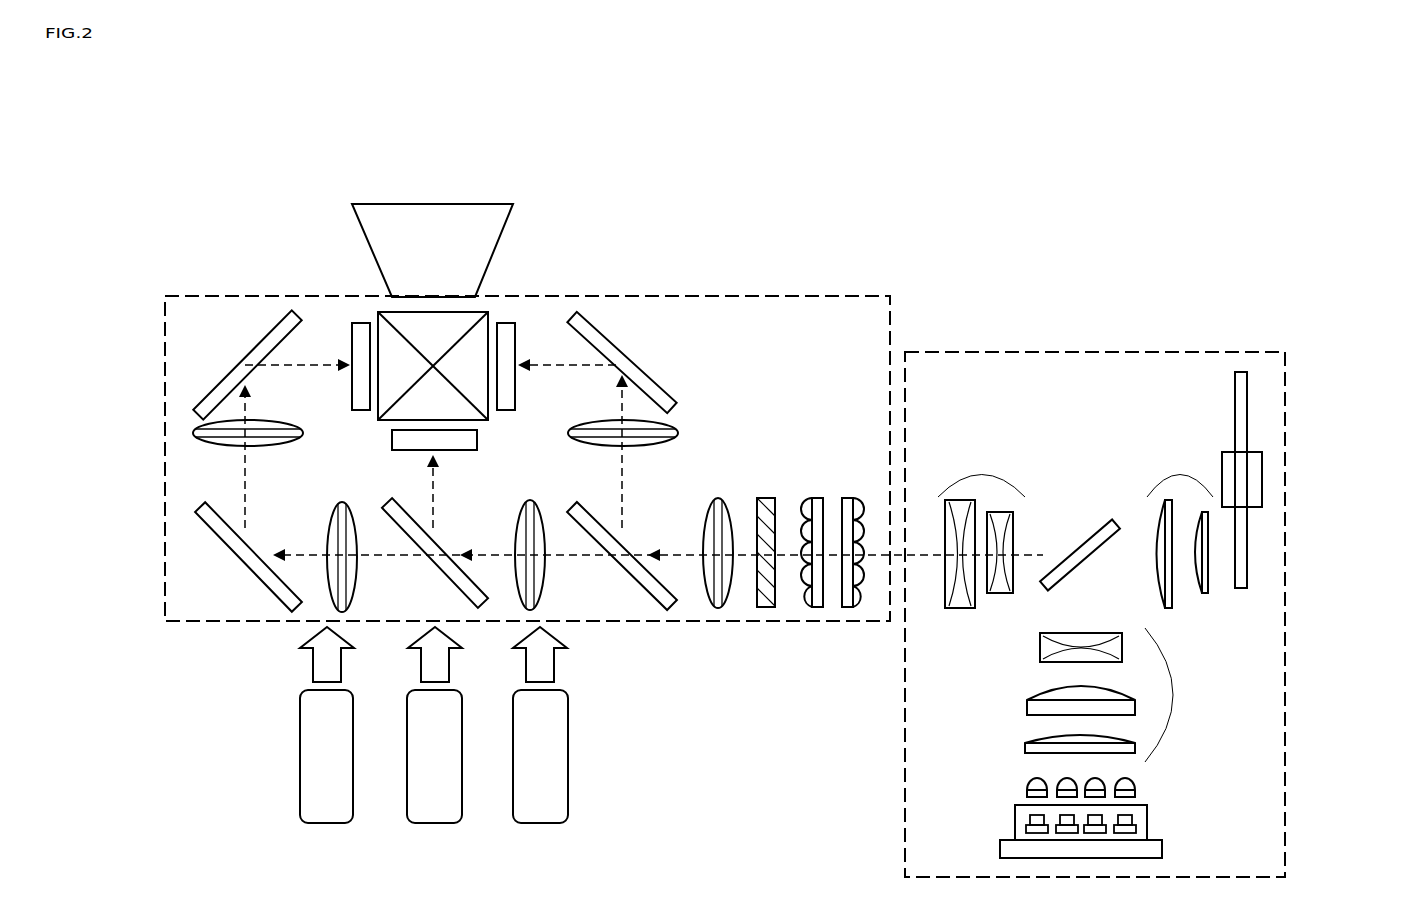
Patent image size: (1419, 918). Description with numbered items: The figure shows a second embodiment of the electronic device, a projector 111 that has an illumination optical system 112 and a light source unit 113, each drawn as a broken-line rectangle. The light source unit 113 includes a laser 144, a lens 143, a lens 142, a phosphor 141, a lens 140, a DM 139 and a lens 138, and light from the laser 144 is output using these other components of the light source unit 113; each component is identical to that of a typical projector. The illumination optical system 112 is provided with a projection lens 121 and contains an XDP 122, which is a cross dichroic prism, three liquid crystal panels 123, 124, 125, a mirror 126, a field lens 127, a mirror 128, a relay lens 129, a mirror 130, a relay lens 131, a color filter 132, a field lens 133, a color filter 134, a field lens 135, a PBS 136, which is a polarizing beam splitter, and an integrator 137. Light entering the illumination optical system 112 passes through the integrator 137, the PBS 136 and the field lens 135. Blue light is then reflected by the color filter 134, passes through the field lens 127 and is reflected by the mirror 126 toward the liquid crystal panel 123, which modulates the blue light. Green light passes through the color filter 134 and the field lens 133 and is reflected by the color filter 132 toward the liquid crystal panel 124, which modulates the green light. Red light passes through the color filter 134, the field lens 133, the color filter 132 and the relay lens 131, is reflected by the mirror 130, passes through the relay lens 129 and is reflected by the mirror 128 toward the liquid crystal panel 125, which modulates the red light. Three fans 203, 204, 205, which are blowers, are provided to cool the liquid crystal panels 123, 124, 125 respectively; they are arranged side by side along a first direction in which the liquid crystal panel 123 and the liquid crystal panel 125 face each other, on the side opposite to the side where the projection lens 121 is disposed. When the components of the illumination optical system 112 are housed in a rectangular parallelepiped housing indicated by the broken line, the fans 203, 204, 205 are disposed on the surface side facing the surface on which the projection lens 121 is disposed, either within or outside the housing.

The projector 111 is at (1020, 227).
The illumination optical system 112 is at (357, 296).
The light source unit 113 is at (1200, 353).
The projection lens 121 is at (488, 215).
The XDP 122 is at (478, 308).
The liquid crystal panel 123 is at (508, 323).
The liquid crystal panel 124 is at (420, 433).
The liquid crystal panel 125 is at (355, 320).
The mirror 126 is at (614, 345).
The field lens 127 is at (680, 432).
The mirror 128 is at (253, 343).
The relay lens 129 is at (195, 430).
The mirror 130 is at (197, 510).
The relay lens 131 is at (330, 505).
The color filter 132 is at (413, 540).
The field lens 133 is at (537, 482).
The color filter 134 is at (648, 590).
The field lens 135 is at (720, 500).
The PBS 136 is at (767, 610).
The integrator 137 is at (832, 613).
The lens 138 is at (973, 473).
The DM 139 is at (1078, 540).
The lens 140 is at (1172, 473).
The phosphor 141 is at (1250, 553).
The lens 142 is at (1173, 692).
The lens 143 is at (1147, 787).
The laser 144 is at (1145, 832).
The fan 203 is at (540, 813).
The fan 204 is at (433, 813).
The fan 205 is at (327, 812).